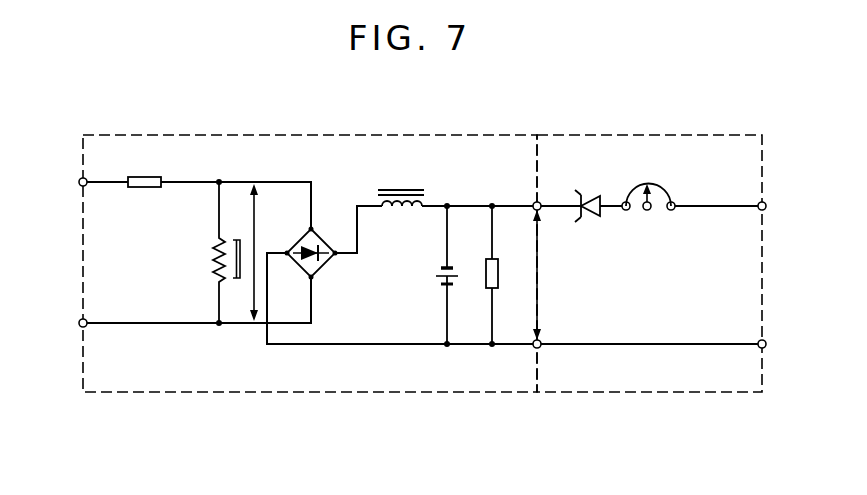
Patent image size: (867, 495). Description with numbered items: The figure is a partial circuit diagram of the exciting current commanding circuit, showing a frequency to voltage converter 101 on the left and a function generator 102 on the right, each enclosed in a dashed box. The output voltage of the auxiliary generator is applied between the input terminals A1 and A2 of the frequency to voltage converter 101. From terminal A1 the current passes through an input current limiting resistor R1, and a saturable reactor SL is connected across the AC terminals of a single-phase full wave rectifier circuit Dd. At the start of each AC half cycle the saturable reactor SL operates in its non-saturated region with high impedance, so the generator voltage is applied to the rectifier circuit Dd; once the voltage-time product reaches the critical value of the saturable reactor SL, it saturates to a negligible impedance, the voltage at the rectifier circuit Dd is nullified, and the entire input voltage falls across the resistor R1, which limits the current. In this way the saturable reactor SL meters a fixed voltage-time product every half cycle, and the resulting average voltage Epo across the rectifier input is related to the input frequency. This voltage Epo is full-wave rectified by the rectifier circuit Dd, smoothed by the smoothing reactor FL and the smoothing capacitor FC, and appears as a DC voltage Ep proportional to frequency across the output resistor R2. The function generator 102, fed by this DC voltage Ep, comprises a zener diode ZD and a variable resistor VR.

The input terminal A1 is at (66, 184).
The input terminal A2 is at (66, 325).
The input current limiting resistor R1 is at (148, 190).
The saturable reactor SL is at (212, 264).
The average voltage Epo is at (265, 252).
The single-phase full wave rectifier circuit Dd is at (319, 266).
The smoothing reactor FL is at (398, 212).
The smoothing capacitor FC is at (438, 276).
The output resistor R2 is at (498, 274).
The DC voltage Ep is at (532, 275).
The zener diode ZD is at (585, 222).
The variable resistor VR is at (648, 212).
The frequency to voltage converter 101 is at (257, 392).
The function generator 102 is at (570, 391).